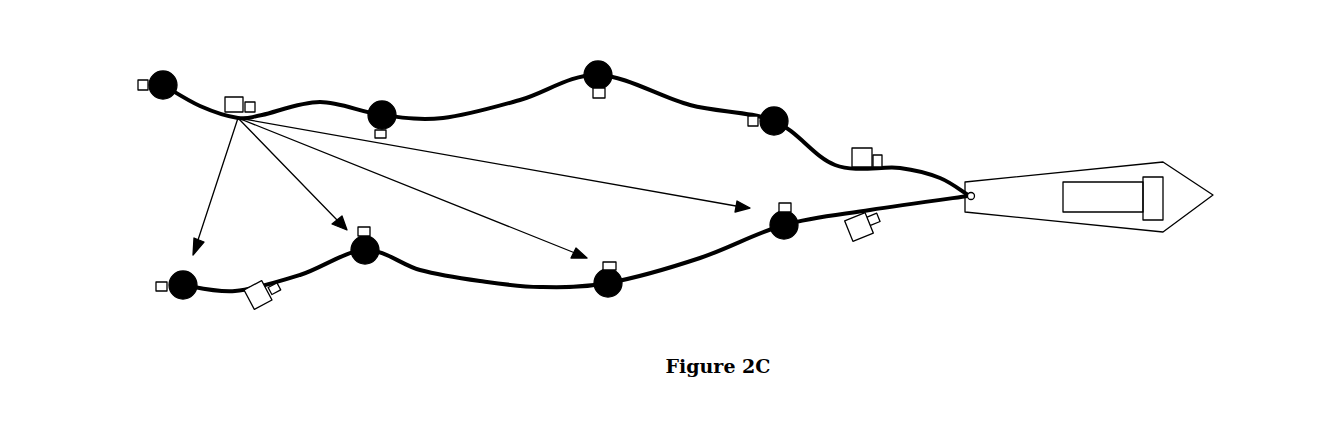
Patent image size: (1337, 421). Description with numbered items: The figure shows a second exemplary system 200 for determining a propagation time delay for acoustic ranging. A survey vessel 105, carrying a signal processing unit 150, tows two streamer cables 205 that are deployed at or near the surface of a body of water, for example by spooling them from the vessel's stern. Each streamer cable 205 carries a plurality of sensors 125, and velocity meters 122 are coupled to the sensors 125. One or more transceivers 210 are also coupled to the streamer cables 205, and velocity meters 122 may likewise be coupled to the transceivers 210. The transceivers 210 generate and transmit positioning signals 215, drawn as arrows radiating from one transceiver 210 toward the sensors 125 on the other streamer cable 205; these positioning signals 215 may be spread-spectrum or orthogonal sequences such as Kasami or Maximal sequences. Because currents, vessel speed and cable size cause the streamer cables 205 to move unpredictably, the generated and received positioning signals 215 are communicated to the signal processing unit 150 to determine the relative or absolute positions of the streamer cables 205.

The survey vessel 105 is at (1187, 173).
The velocity meter 122 is at (143, 79).
The sensor 125 is at (167, 71).
The signal processing unit 150 is at (1113, 183).
The second exemplary system 200 is at (873, 53).
The streamer cable 205 is at (910, 170).
The transceiver 210 is at (232, 97).
The positioning signal 215 is at (206, 208).